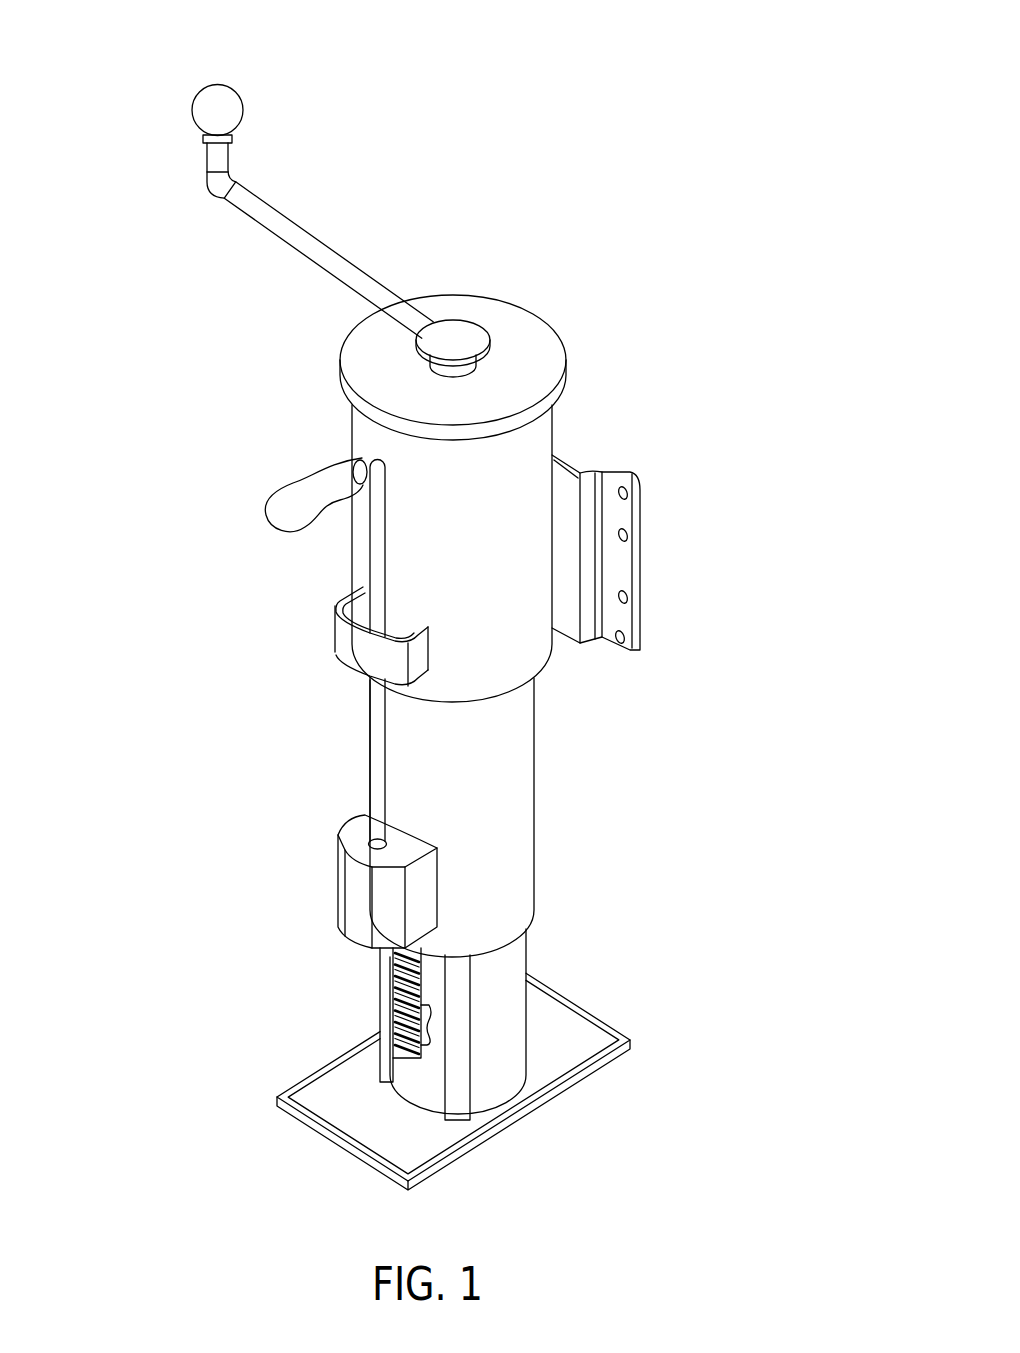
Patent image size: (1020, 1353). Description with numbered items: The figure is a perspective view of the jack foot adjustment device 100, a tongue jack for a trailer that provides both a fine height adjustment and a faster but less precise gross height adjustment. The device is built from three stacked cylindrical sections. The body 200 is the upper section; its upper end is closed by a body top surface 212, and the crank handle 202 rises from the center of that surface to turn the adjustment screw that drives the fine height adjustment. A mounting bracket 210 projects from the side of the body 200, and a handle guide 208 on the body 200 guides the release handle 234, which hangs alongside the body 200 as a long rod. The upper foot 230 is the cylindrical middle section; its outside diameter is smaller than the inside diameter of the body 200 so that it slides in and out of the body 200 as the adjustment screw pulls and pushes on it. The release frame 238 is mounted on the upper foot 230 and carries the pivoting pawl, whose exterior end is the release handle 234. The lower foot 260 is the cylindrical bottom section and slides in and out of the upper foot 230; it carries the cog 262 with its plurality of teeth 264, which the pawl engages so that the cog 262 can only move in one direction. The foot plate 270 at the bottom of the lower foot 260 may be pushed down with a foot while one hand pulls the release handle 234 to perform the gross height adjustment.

The jack foot adjustment device 100 is at (698, 116).
The crank handle 202 is at (292, 225).
The body top surface 212 is at (532, 325).
The body 200 is at (540, 450).
The mounting bracket 210 is at (640, 520).
The release handle 234 is at (375, 540).
The handle guide 208 is at (357, 642).
The upper foot 230 is at (520, 765).
The lower foot 260 is at (517, 965).
The release frame 238 is at (357, 900).
The cog 262 is at (395, 1010).
The plurality of teeth 264 is at (432, 1027).
The foot plate 270 is at (347, 1122).